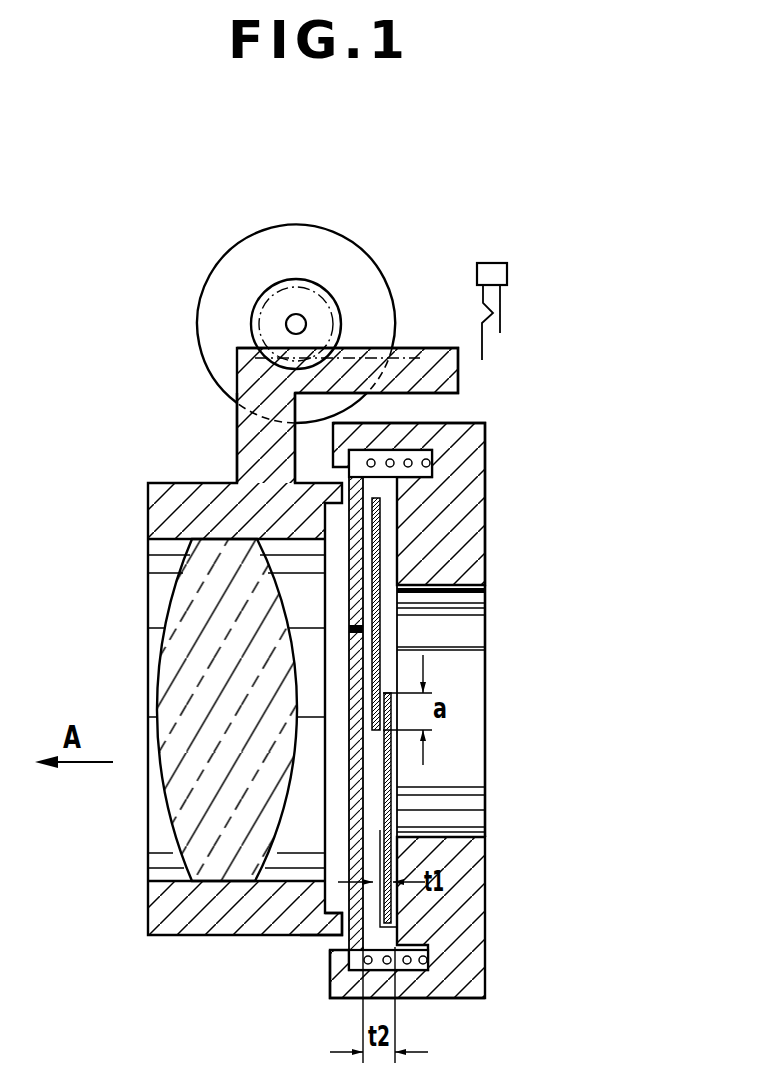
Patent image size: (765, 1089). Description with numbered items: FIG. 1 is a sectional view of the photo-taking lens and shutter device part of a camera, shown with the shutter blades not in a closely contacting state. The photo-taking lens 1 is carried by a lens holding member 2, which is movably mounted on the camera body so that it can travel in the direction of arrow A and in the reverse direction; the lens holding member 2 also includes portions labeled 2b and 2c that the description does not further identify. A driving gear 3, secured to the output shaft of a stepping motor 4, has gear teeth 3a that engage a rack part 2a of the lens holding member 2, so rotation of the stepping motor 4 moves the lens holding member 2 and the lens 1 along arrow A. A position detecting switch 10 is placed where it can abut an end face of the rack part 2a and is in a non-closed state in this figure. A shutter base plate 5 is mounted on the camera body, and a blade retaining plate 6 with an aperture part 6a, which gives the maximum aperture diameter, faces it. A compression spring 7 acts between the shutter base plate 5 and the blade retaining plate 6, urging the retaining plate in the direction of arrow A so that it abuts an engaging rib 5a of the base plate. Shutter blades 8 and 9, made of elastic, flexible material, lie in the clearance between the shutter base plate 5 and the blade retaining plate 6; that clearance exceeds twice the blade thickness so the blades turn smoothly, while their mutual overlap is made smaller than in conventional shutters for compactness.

The photo-taking lens 1 is at (190, 687).
The lens holding member 2 is at (205, 908).
The rack part 2a is at (430, 353).
The upright portion of lens barrel 2b is at (250, 460).
The projection of lens barrel 2c is at (325, 930).
The driving gear 3 is at (295, 303).
The gear teeth 3a is at (317, 290).
The stepping motor 4 is at (243, 258).
The shutter base plate 5 is at (450, 937).
The engaging rib 5a is at (340, 975).
The blade retaining plate 6 is at (375, 492).
The aperture part 6a is at (397, 637).
The compression spring 7 is at (413, 443).
The shutter blade 8 is at (380, 550).
The shutter blade 9 is at (397, 787).
The position detecting switch 10 is at (490, 272).